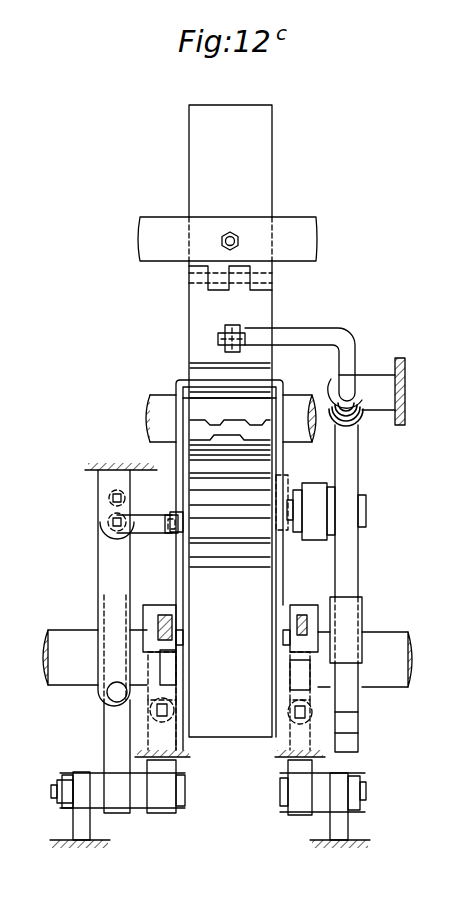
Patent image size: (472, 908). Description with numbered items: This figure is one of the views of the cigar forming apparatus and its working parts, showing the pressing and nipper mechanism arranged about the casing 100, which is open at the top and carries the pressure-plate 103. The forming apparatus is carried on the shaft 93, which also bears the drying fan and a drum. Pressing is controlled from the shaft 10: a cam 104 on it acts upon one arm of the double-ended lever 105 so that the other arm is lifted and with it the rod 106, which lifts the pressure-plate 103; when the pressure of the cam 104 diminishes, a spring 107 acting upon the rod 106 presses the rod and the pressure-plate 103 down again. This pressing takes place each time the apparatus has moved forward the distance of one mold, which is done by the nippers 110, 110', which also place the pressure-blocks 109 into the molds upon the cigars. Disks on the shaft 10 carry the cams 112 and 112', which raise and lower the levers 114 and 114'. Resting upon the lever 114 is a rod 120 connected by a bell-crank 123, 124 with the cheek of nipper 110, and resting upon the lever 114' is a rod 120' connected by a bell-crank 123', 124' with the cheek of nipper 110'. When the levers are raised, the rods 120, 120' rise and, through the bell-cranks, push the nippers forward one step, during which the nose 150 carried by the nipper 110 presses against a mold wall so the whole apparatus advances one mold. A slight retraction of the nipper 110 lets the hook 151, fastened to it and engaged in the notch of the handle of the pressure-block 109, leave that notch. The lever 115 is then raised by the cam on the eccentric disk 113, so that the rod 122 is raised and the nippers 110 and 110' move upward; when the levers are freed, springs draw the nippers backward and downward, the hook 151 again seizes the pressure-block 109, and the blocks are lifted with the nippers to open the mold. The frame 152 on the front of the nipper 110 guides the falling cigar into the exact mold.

The casing 100 is at (230, 421).
The pressure-plate 103 is at (265, 308).
The rod 106 is at (345, 345).
The spring 107 is at (358, 415).
The double-ended lever 105 is at (356, 549).
The cam 104 is at (362, 704).
The frame 152 is at (283, 385).
The shaft 93 is at (155, 418).
The hook 151 is at (238, 440).
The nose 150 is at (207, 421).
The pressure-block 109 is at (230, 465).
The nipper 110 is at (300, 494).
The nipper 110' is at (161, 512).
The rod 122 is at (115, 561).
The shaft 10 is at (416, 673).
The disk 113 is at (110, 718).
The lever 115 is at (112, 753).
The cam 112' is at (159, 620).
The bell-crank 124' is at (202, 631).
The bell-crank 123' is at (188, 675).
The rod 120' is at (188, 724).
The lever 114' is at (135, 797).
The cam 112 is at (306, 619).
The bell-crank 124 is at (264, 636).
The bell-crank 123 is at (274, 676).
The rod 120 is at (273, 725).
The lever 114 is at (308, 800).